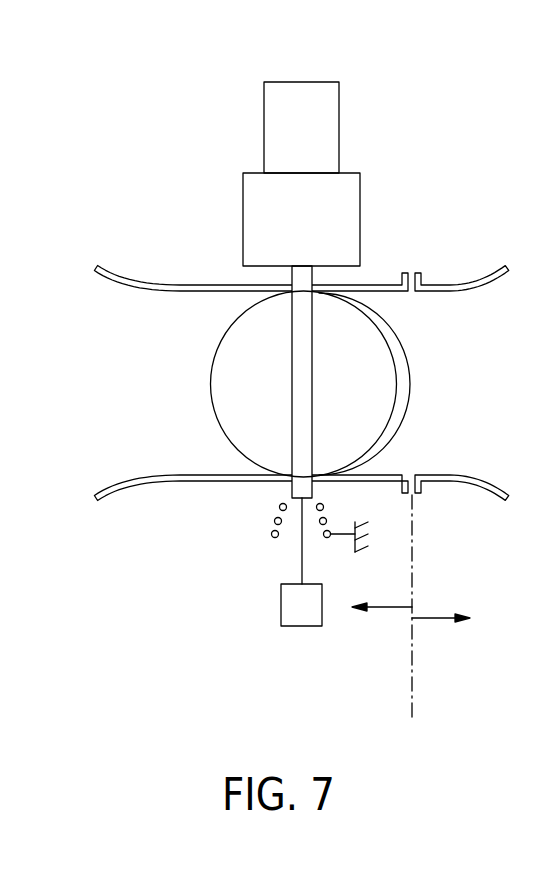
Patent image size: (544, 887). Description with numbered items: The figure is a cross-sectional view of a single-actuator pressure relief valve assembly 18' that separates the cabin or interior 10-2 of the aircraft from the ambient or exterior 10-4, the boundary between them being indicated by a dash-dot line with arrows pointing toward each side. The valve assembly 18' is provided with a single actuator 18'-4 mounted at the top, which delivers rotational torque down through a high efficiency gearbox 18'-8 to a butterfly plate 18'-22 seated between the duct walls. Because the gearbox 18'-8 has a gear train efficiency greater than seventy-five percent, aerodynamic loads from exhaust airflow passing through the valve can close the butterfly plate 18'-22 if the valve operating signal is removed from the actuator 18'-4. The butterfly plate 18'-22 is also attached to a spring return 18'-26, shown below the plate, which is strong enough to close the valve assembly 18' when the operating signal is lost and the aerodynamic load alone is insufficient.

The valve assembly 18' is at (272, 406).
The actuator 18'-4 is at (306, 100).
The high efficiency gearbox 18'-8 is at (348, 219).
The butterfly plate 18'-22 is at (255, 384).
The spring return 18'-26 is at (265, 534).
The cabin 10-2 is at (383, 606).
The ambient 10-4 is at (437, 617).